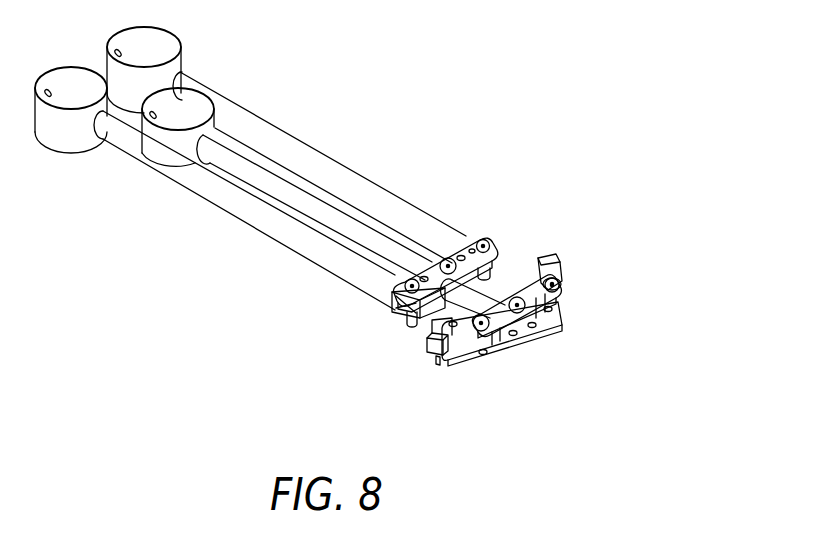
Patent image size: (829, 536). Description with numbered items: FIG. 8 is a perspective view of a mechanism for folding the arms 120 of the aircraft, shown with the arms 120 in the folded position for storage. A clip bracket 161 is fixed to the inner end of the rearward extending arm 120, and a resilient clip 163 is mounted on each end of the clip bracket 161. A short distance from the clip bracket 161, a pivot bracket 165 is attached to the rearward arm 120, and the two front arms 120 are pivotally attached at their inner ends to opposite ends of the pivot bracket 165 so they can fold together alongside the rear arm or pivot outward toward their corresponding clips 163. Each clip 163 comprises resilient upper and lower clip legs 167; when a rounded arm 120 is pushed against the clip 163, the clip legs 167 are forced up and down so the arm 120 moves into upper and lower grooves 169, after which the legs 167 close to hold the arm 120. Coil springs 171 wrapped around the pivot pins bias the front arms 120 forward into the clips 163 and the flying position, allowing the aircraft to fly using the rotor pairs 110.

The rotor pairs 110 is at (58, 157).
The arms 120 is at (327, 158).
The clip bracket 161 is at (508, 358).
The resilient clip 163 is at (562, 258).
The pivot bracket 165 is at (456, 240).
The clip legs 167 is at (427, 343).
The grooves 169 is at (437, 366).
The coil springs 171 is at (392, 302).